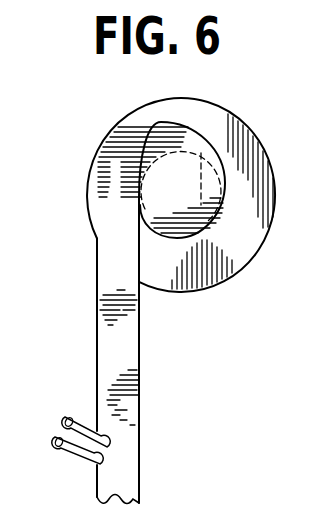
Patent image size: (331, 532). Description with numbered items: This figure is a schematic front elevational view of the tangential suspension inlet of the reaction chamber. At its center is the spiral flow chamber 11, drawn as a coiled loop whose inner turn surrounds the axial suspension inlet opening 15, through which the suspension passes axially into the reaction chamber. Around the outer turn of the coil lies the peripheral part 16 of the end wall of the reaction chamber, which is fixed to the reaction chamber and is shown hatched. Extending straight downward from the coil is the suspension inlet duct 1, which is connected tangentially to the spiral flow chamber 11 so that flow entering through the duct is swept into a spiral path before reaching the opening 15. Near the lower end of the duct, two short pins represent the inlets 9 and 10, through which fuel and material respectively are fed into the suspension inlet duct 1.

The suspension inlet duct 1 is at (132, 397).
The fuel inlet 9 is at (78, 412).
The material inlet 10 is at (67, 448).
The spiral flow chamber 11 is at (186, 126).
The axial suspension inlet opening 15 is at (218, 216).
The peripheral part of the end wall 16 is at (248, 147).